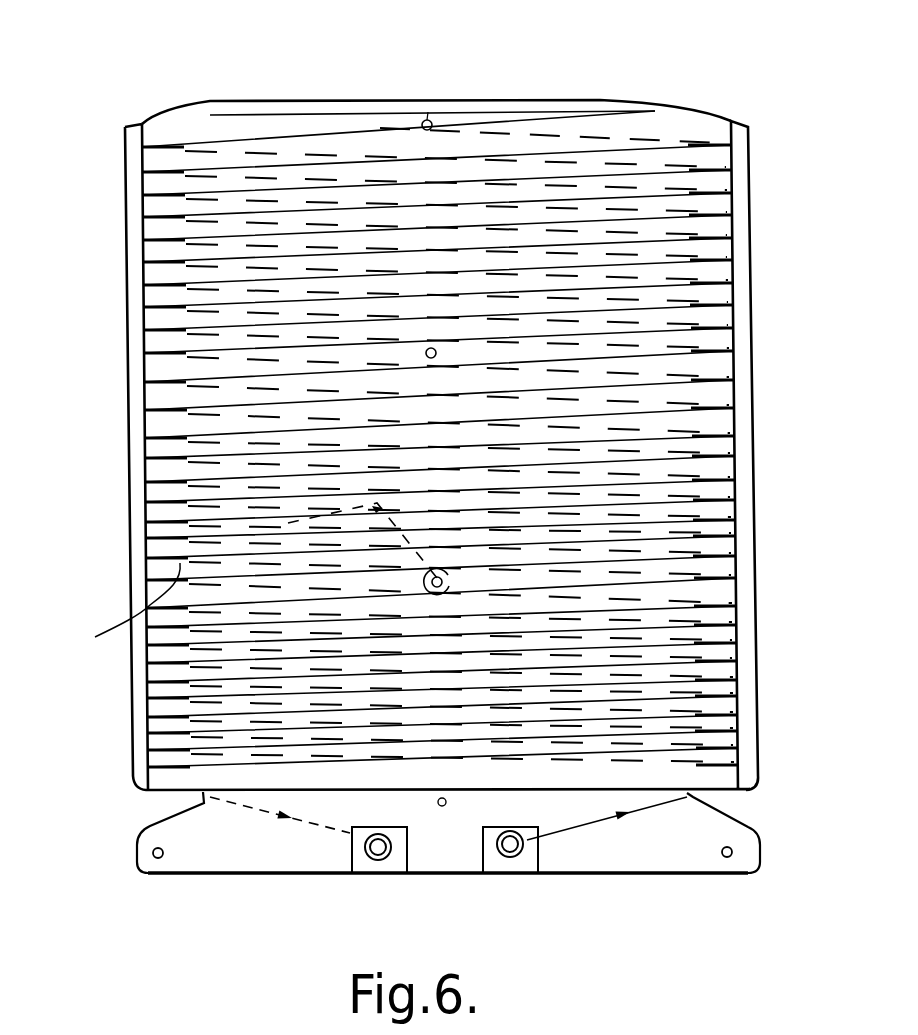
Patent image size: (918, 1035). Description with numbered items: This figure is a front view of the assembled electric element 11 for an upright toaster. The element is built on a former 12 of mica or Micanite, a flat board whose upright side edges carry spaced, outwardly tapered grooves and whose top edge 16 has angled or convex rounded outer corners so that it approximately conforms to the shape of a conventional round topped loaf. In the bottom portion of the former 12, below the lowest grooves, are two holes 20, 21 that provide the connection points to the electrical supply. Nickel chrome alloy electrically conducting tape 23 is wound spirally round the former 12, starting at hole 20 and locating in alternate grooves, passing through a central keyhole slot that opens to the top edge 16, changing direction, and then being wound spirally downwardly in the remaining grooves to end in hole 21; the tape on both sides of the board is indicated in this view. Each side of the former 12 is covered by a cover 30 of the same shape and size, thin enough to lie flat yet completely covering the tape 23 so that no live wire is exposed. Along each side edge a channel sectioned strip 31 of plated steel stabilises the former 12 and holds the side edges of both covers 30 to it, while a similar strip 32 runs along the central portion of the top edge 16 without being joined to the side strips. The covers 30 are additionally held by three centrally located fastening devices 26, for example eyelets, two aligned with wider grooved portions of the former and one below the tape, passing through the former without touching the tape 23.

The electric element 11 is at (140, 83).
The former 12 is at (393, 863).
The top edge 16 is at (670, 102).
The hole 20 is at (513, 858).
The hole 21 is at (375, 860).
The electrically conducting tape 23 is at (602, 907).
The fastening devices 26 is at (437, 353).
The cover 30 is at (702, 153).
The channel sectioned strip 31 is at (137, 457).
The strip 32 is at (430, 110).